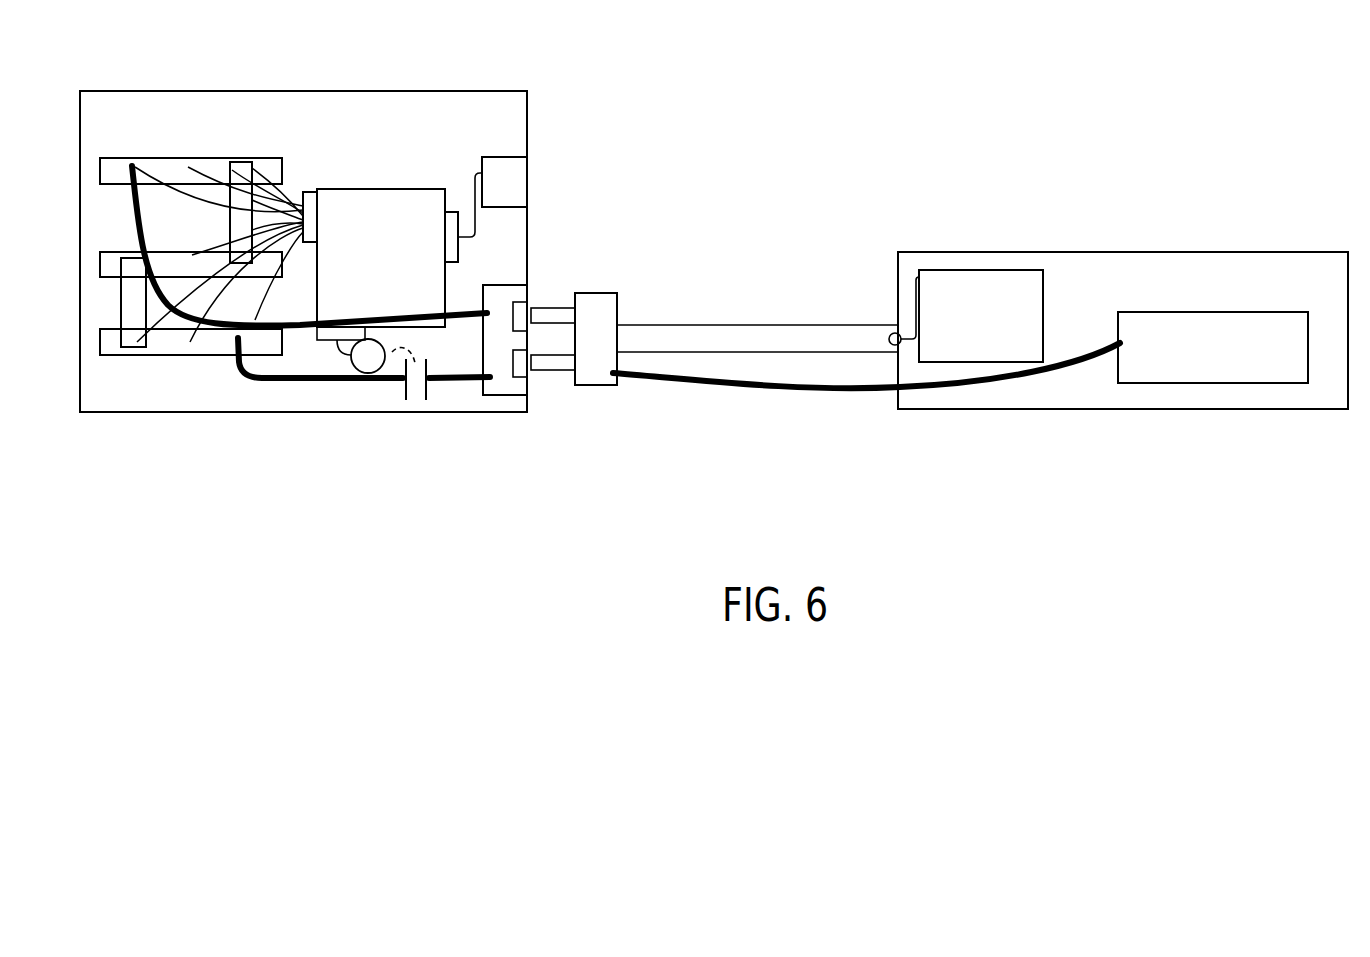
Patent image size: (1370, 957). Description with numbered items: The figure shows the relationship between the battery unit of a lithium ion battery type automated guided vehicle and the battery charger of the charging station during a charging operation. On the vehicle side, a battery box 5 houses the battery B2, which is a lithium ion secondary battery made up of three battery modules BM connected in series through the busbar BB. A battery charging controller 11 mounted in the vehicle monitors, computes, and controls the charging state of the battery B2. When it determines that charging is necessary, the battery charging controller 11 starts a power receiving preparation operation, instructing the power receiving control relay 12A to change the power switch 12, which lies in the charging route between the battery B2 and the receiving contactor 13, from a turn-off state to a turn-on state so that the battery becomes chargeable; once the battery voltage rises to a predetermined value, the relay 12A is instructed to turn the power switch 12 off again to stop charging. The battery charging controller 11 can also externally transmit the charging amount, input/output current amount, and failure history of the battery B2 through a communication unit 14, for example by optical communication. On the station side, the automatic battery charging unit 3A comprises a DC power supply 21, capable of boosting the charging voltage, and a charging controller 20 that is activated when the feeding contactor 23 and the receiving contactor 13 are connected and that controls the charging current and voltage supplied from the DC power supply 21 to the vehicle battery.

The battery box 5 is at (481, 86).
The battery B2 is at (194, 217).
The battery module BM is at (115, 166).
The busbar BB is at (238, 164).
The battery charging controller 11 is at (393, 253).
The power switch 12 is at (417, 388).
The power receiving control relay 12A is at (368, 360).
The receiving contactor 13 is at (508, 385).
The communication unit 14 is at (510, 186).
The feeding contactor 23 is at (598, 374).
The automatic battery charging unit 3A is at (1118, 315).
The charging controller 20 is at (978, 269).
The DC power supply 21 is at (1213, 385).